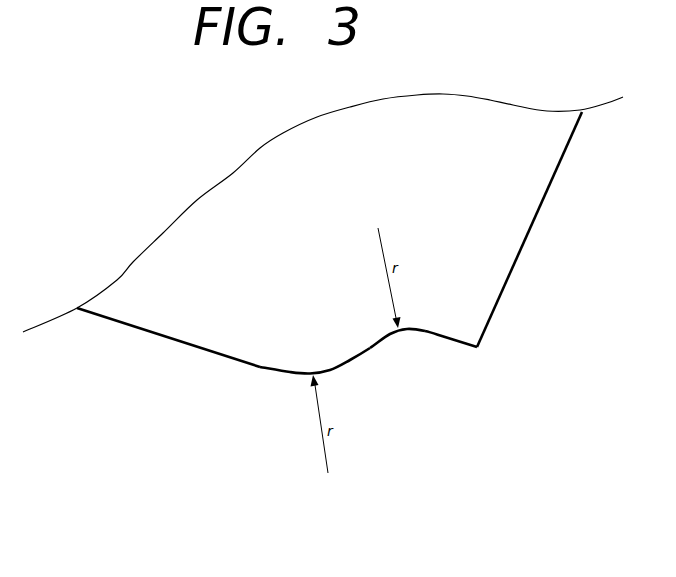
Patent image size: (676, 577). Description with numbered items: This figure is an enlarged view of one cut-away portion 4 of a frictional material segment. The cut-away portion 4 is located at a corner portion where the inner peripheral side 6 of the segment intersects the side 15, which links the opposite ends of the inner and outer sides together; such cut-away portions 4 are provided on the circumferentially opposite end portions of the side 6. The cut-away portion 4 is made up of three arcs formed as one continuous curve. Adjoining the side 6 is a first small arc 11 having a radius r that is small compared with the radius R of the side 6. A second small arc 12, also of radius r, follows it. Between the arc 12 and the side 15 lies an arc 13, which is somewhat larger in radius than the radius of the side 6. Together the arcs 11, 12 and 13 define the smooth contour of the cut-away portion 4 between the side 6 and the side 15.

The cut-away portion 4 is at (430, 405).
The inner peripheral side 6 is at (210, 337).
The arc 11 is at (335, 368).
The arc 12 is at (428, 328).
The arc 13 is at (457, 343).
The side 15 is at (537, 213).